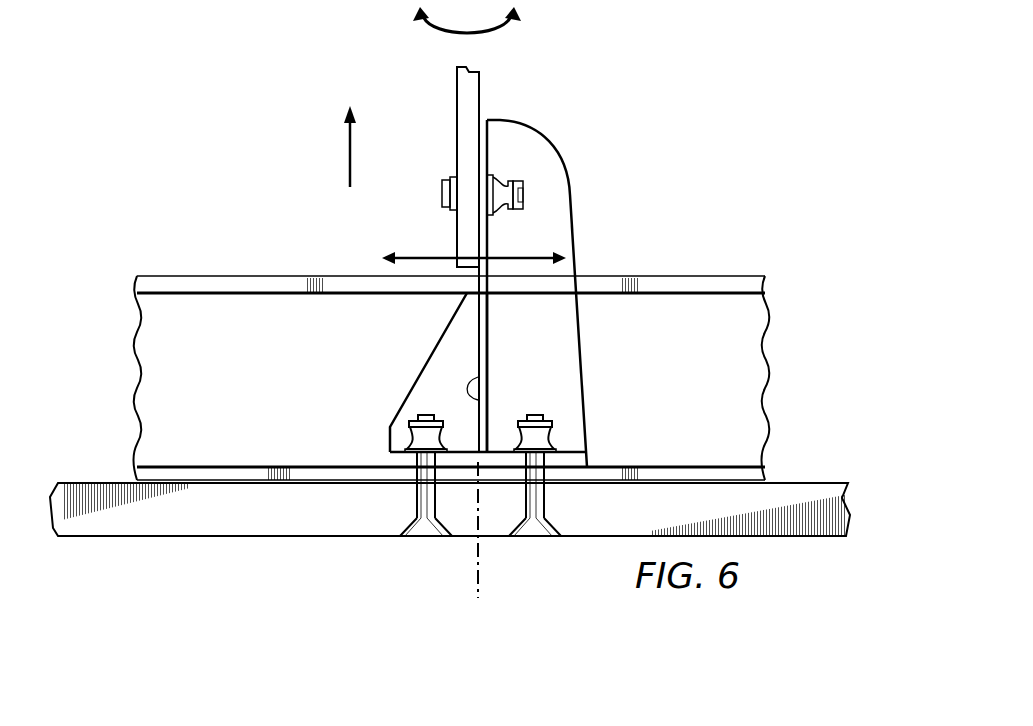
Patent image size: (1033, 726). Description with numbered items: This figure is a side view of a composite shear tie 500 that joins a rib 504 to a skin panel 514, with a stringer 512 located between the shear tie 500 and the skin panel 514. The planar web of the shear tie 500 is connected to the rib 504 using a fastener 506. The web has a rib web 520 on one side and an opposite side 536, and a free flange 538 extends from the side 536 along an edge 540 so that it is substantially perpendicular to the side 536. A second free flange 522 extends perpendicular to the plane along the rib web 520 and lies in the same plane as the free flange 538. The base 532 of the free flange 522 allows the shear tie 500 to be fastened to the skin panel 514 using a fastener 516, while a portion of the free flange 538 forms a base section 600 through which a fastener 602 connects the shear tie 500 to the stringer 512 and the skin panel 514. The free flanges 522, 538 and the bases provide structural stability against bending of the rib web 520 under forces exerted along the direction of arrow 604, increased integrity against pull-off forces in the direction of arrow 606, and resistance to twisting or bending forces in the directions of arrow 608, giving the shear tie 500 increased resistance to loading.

The composite shear tie 500 is at (587, 190).
The rib 504 is at (458, 96).
The fastener 506 is at (441, 190).
The stringer 512 is at (698, 266).
The skin panel 514 is at (298, 538).
The fastener 516 is at (555, 414).
The rib web 520 is at (490, 330).
The free flange 522 is at (585, 363).
The base 532 is at (391, 457).
The side 536 is at (480, 399).
The free flange 538 is at (421, 368).
The edge 540 is at (481, 360).
The base section 600 is at (480, 588).
The fastener 602 is at (410, 416).
The arrow 604 is at (410, 255).
The arrow 606 is at (347, 160).
The arrow 608 is at (515, 32).